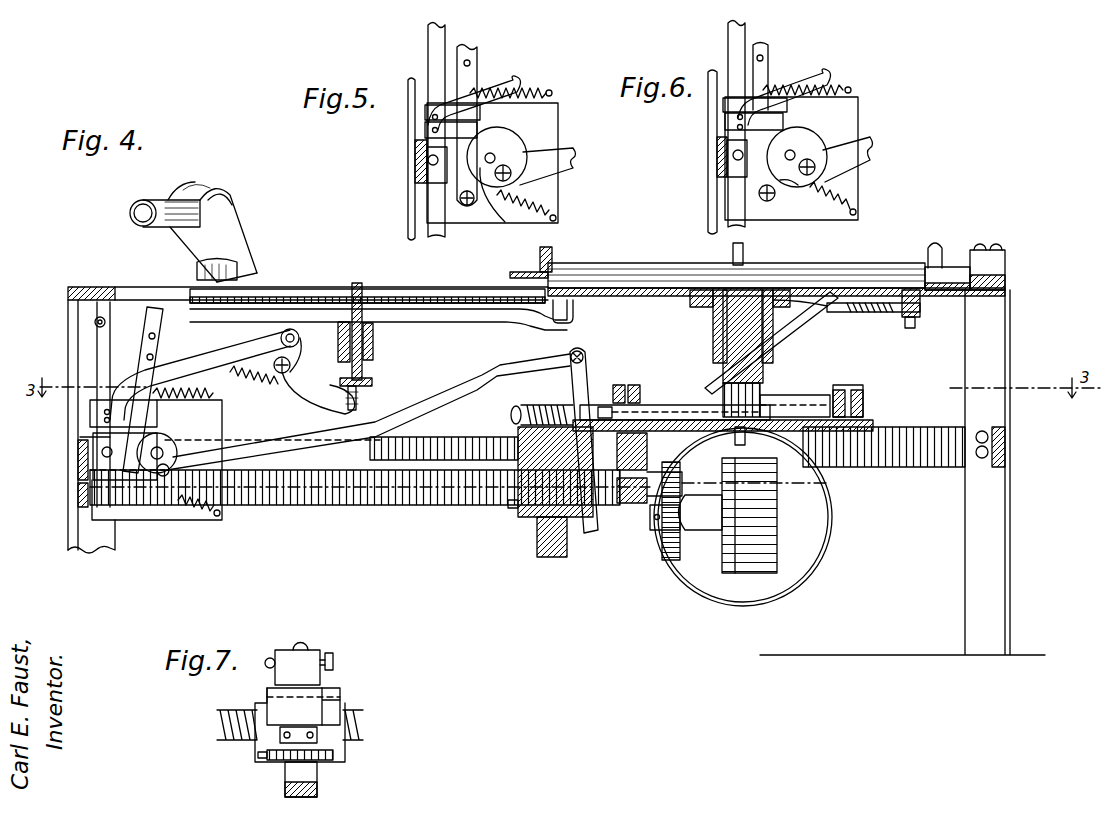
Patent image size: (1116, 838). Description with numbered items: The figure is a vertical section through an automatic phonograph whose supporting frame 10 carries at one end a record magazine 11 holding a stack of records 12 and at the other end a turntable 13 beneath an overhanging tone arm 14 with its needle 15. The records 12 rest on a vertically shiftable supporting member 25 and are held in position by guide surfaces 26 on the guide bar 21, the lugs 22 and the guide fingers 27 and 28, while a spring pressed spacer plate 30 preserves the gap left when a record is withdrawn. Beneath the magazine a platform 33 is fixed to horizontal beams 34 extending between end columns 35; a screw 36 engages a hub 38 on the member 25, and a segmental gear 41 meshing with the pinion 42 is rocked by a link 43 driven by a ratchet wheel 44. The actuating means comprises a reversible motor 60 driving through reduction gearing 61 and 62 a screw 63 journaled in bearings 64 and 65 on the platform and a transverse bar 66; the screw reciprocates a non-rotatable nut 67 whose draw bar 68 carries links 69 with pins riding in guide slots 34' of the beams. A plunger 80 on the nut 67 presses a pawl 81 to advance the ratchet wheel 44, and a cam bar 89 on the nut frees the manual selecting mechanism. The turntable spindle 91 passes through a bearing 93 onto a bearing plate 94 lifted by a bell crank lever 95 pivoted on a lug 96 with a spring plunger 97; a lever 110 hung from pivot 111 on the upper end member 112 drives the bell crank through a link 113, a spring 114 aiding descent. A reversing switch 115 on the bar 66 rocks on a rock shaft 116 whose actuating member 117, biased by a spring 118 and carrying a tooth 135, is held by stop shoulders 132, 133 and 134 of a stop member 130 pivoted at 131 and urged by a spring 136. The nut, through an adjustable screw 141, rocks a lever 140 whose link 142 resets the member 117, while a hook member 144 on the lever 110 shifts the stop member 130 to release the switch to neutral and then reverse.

In FIG. 4, the supporting frame 10 is at (58, 334).
In FIG. 4, the record magazine 11 is at (892, 258).
In FIG. 4, the records 12 is at (838, 263).
In FIG. 4, the turntable 13 is at (417, 289).
In FIG. 4, the tone arm 14 is at (130, 203).
In FIG. 4, the needle 15 is at (240, 282).
In FIG. 4, the guide bar 21 is at (540, 268).
In FIG. 4, the lugs 22 is at (743, 250).
In FIG. 4, the supporting member 25 is at (634, 297).
In FIG. 4, the guide surfaces 26 is at (560, 257).
In FIG. 4, the guide fingers 27 is at (498, 318).
In FIG. 4, the guide fingers 28 is at (948, 265).
In FIG. 4, the spacer plate 30 is at (975, 262).
In FIG. 4, the platform 33 is at (872, 422).
In FIG. 4, the horizontal beams 34 is at (904, 465).
In FIG. 4, the guide slots 34' is at (415, 493).
In FIG. 4, the end columns 35 is at (90, 541).
In FIG. 5, the end columns 35 is at (408, 118).
In FIG. 6, the end columns 35 is at (708, 203).
In FIG. 4, the screw 36 is at (760, 378).
In FIG. 4, the hub 38 is at (713, 325).
In FIG. 4, the segmental gear 41 is at (812, 410).
In FIG. 4, the pinion 42 is at (740, 431).
In FIG. 4, the link 43 is at (790, 400).
In FIG. 4, the ratchet wheel 44 is at (668, 404).
In FIG. 4, the reversible motor 60 is at (795, 562).
In FIG. 4, the reduction gearing 61 is at (750, 568).
In FIG. 4, the reduction gearing 62 is at (664, 555).
In FIG. 4, the screw 63 is at (392, 504).
In FIG. 7, the screw 63 is at (220, 735).
In FIG. 4, the bearing 64 is at (80, 493).
In FIG. 4, the bearing 65 is at (636, 503).
In FIG. 4, the transverse bar 66 is at (80, 457).
In FIG. 5, the transverse bar 66 is at (415, 170).
In FIG. 6, the transverse bar 66 is at (717, 152).
In FIG. 4, the nut 67 is at (534, 536).
In FIG. 7, the nut 67 is at (354, 759).
In FIG. 4, the draw bar 68 is at (553, 557).
In FIG. 7, the draw bar 68 is at (317, 789).
In FIG. 4, the links 69 is at (715, 375).
In FIG. 4, the plunger 80 is at (511, 417).
In FIG. 7, the plunger 80 is at (334, 660).
In FIG. 4, the pawl 81 is at (595, 405).
In FIG. 7, the cam bar 89 is at (345, 712).
In FIG. 4, the spindle 91 is at (366, 352).
In FIG. 4, the bearing 93 is at (364, 332).
In FIG. 4, the bearing plate 94 is at (374, 381).
In FIG. 4, the bell crank lever 95 is at (318, 398).
In FIG. 4, the lug 96 is at (299, 352).
In FIG. 4, the spring plunger 97 is at (358, 400).
In FIG. 4, the lever 110 is at (97, 355).
In FIG. 5, the lever 110 is at (428, 53).
In FIG. 6, the lever 110 is at (728, 48).
In FIG. 4, the pivot 111 is at (96, 325).
In FIG. 4, the upper end member 112 is at (82, 286).
In FIG. 4, the link 113 is at (198, 360).
In FIG. 5, the link 113 is at (485, 82).
In FIG. 6, the link 113 is at (800, 80).
In FIG. 4, the spring 114 is at (246, 382).
In FIG. 4, the reversing switch 115 is at (183, 426).
In FIG. 4, the rock shaft 116 is at (148, 475).
In FIG. 5, the rock shaft 116 is at (493, 156).
In FIG. 5, the actuating member 117 is at (508, 170).
In FIG. 6, the actuating member 117 is at (800, 150).
In FIG. 4, the spring 118 is at (205, 507).
In FIG. 5, the spring 118 is at (540, 208).
In FIG. 6, the spring 118 is at (840, 198).
In FIG. 4, the stop member 130 is at (148, 355).
In FIG. 5, the stop member 130 is at (470, 190).
In FIG. 5, the pivot 131 is at (467, 206).
In FIG. 5, the stop shoulder 132 is at (475, 143).
In FIG. 6, the stop shoulder 132 is at (780, 140).
In FIG. 6, the stop shoulder 133 is at (760, 196).
In FIG. 5, the stop shoulder 134 is at (505, 222).
In FIG. 4, the tooth 135 is at (150, 450).
In FIG. 6, the tooth 135 is at (790, 182).
In FIG. 4, the spring 136 is at (215, 395).
In FIG. 5, the spring 136 is at (510, 90).
In FIG. 6, the spring 136 is at (838, 86).
In FIG. 4, the lever 140 is at (586, 376).
In FIG. 4, the adjustable screw 141 is at (512, 510).
In FIG. 7, the adjustable screw 141 is at (258, 758).
In FIG. 4, the link 142 is at (464, 388).
In FIG. 5, the link 142 is at (560, 162).
In FIG. 6, the link 142 is at (855, 150).
In FIG. 4, the hook member 144 is at (95, 425).
In FIG. 5, the hook member 144 is at (450, 135).
In FIG. 6, the hook member 144 is at (770, 110).